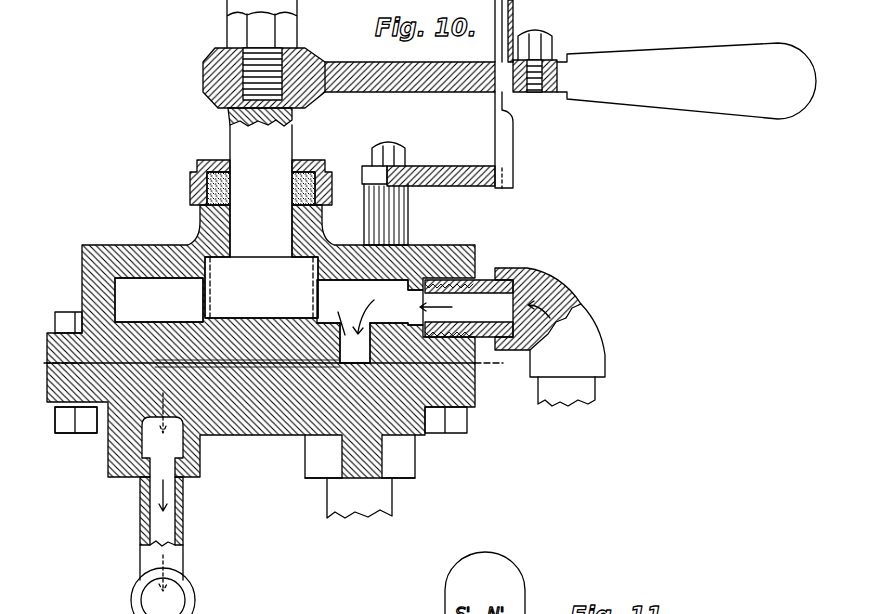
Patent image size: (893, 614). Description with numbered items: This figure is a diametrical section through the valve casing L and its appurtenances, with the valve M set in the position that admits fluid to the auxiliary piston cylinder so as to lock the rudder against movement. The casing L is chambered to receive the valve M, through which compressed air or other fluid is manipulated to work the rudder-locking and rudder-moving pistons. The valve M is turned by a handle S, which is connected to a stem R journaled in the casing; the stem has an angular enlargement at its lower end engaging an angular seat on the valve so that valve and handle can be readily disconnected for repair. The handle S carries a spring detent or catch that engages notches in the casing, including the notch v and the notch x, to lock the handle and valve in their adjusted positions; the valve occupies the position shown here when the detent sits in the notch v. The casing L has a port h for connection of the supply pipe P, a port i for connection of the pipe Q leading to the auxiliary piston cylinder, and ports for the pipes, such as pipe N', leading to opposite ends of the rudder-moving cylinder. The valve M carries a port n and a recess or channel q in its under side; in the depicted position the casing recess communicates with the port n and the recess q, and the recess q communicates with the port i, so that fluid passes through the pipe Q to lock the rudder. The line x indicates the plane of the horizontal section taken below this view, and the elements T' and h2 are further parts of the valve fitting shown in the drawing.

The valve casing L is at (261, 341).
The valve M is at (152, 322).
The recess or channel of the valve q is at (217, 365).
The stem R is at (261, 128).
The handle S is at (570, 74).
The vertical member and plate T' is at (457, 94).
The notch v is at (494, 189).
The port of the valve n is at (384, 307).
The port h2 is at (355, 323).
The port h is at (487, 282).
The supply pipe P is at (596, 345).
The notch x is at (271, 364).
The port i is at (47, 426).
The pipe Q is at (166, 520).
The pipe N' is at (383, 498).